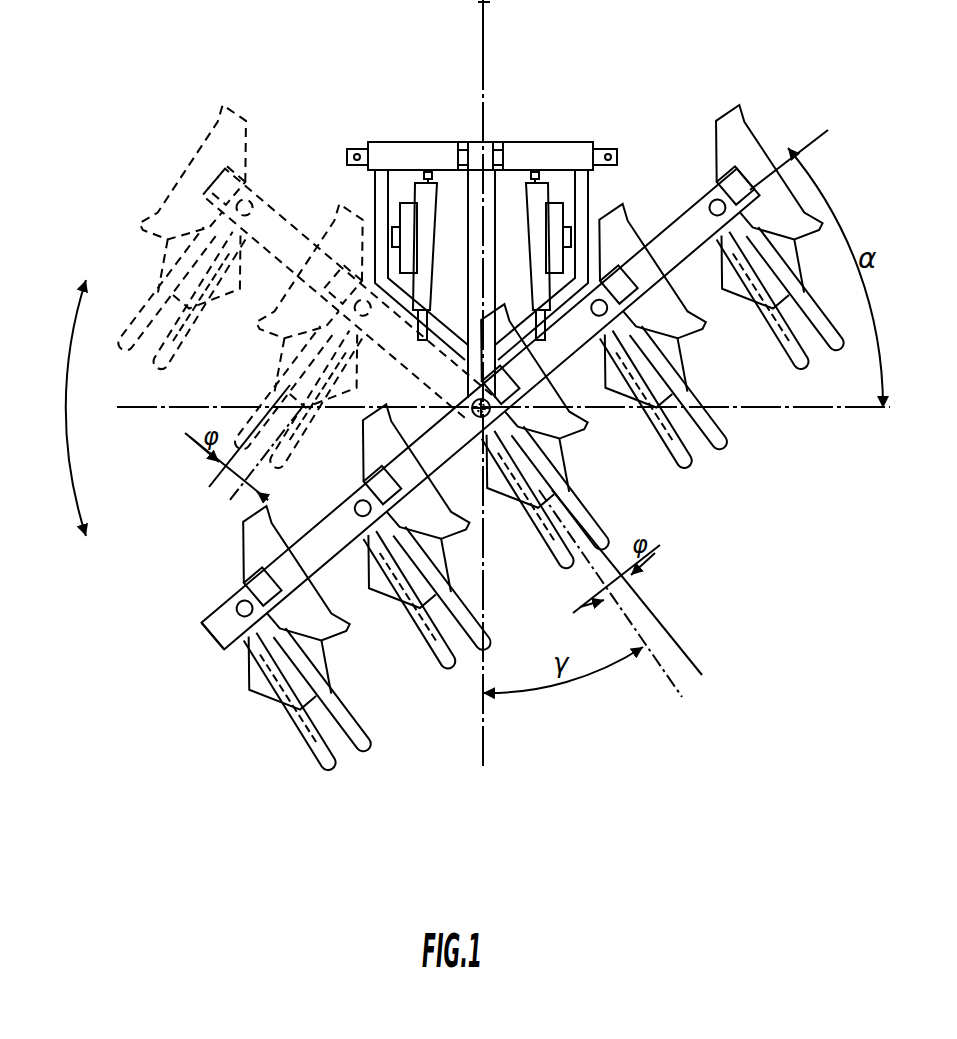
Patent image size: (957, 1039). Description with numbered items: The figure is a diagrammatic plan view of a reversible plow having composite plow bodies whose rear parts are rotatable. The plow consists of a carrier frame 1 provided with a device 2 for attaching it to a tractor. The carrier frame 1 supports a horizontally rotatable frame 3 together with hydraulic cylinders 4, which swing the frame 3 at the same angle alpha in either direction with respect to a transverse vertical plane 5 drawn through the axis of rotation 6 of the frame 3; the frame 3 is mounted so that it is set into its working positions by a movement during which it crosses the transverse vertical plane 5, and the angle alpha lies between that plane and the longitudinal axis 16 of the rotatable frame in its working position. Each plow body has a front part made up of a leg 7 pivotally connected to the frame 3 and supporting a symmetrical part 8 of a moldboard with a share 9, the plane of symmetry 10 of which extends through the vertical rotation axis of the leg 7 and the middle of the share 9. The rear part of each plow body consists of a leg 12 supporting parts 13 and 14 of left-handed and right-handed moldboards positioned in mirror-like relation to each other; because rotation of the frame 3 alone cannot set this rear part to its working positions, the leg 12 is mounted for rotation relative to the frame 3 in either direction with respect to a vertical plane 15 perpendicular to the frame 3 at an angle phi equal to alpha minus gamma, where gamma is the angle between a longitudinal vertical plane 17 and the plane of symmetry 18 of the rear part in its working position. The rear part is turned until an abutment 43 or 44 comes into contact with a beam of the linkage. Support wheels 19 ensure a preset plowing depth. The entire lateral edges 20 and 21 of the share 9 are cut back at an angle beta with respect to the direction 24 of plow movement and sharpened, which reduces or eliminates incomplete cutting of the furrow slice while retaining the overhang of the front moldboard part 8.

The carrier frame 1 is at (580, 193).
The device for attaching to a tractor 2 is at (517, 147).
The rotatable frame 3 is at (730, 183).
The hydraulic cylinders 4 is at (427, 192).
The transverse vertical plane 5 is at (782, 418).
The axis of rotation 6 is at (478, 420).
The leg of the front part of the plow body 7 is at (357, 503).
The symmetrical part of the moldboard 8 is at (248, 557).
The share 9 is at (243, 523).
The plane of symmetry 10 is at (820, 133).
The leg of the rear part of the plow body 12 is at (252, 656).
The moldboard part 13 is at (313, 753).
The moldboard part 14 is at (353, 727).
The vertical plane perpendicular to the frame 15 is at (690, 650).
The longitudinal axis of the rotatable frame 16 is at (195, 652).
The longitudinal vertical plane 17 is at (486, 733).
The plane of symmetry of the rear part of the plow body 18 is at (663, 680).
The support wheels 19 is at (553, 213).
The lateral edge of the share 20 is at (737, 112).
The lateral edge of the share 21 is at (806, 230).
The direction of plow movement 24 is at (486, 27).
The abutment 43 is at (380, 540).
The abutment 44 is at (432, 530).